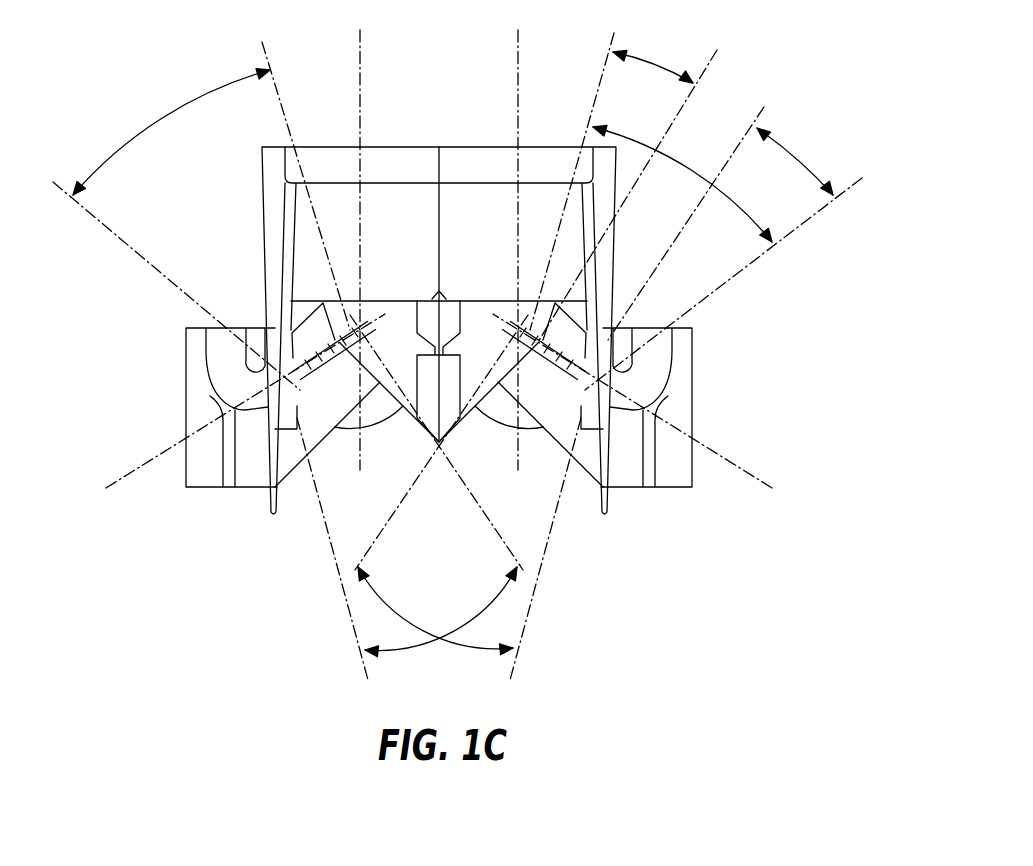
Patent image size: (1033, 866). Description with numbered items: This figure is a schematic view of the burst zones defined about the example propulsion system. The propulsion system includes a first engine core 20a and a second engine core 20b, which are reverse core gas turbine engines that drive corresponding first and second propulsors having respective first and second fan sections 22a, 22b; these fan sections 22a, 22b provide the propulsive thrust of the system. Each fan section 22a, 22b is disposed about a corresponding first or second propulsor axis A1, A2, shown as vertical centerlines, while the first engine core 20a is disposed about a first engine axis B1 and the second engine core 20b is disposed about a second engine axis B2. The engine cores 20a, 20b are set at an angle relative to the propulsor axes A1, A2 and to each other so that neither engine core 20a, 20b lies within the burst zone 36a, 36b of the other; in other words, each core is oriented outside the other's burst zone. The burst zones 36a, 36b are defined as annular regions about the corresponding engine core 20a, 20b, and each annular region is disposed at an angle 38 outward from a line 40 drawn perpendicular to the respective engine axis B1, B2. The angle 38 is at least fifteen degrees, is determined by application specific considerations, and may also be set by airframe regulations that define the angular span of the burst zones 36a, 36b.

The first engine core 20a is at (318, 374).
The second engine core 20b is at (552, 368).
The first fan section 22a is at (393, 198).
The second fan section 22b is at (472, 200).
The first burst zone 36a is at (477, 615).
The second burst zone 36b is at (410, 615).
The angle 38 is at (795, 155).
The line perpendicular to engine axis 40 is at (757, 120).
The first propulsor axis A1 is at (383, 248).
The second propulsor axis A2 is at (501, 248).
The first engine axis B1 is at (158, 466).
The second engine axis B2 is at (720, 466).